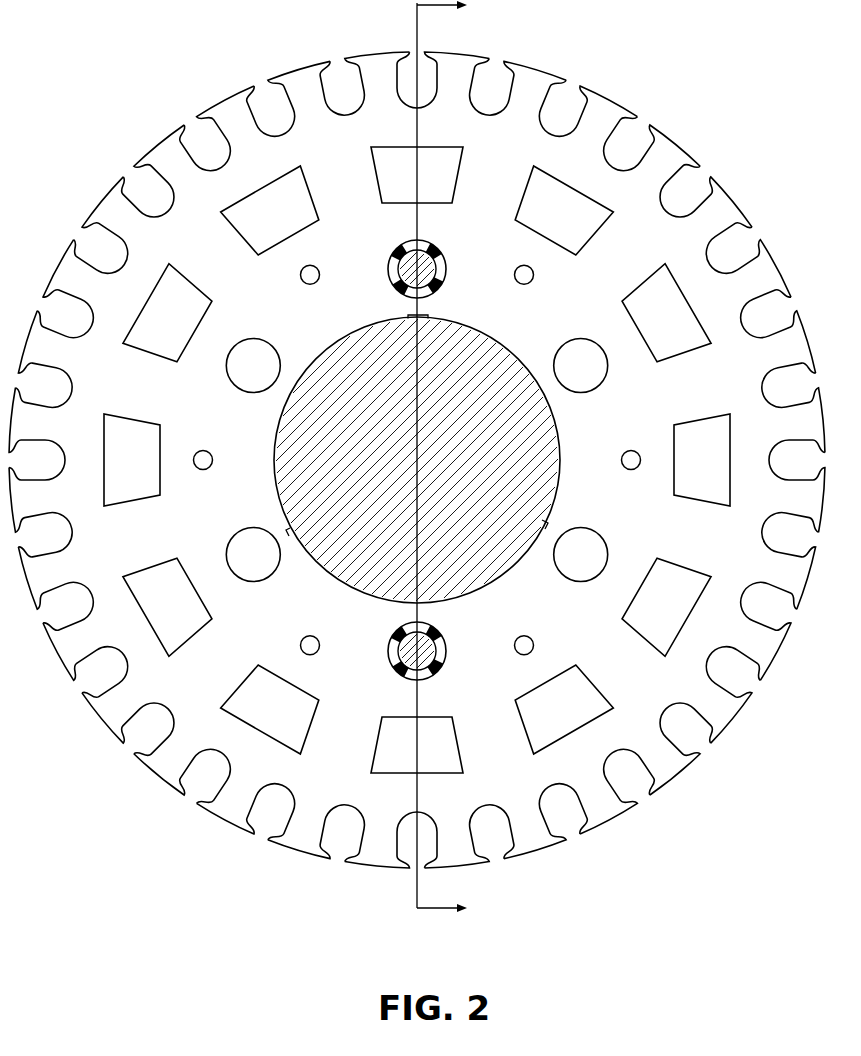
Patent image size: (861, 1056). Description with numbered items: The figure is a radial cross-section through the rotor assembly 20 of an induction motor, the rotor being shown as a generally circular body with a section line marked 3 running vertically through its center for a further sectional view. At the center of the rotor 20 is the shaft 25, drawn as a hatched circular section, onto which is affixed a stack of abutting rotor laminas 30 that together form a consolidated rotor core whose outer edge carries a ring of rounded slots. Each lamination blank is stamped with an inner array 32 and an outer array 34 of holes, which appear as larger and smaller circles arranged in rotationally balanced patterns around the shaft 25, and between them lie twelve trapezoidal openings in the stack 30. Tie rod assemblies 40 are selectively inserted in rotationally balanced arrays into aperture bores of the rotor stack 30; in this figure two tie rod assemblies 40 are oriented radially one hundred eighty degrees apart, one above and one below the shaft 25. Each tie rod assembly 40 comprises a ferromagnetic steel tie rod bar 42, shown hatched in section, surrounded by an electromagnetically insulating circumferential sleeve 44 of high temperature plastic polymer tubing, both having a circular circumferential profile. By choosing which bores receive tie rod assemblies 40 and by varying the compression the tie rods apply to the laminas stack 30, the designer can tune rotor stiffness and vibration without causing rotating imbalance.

The rotor assembly 20 is at (417, 456).
The shaft 25 is at (283, 484).
The rotor laminas stack 30 is at (668, 162).
The inner array of holes 32 is at (232, 376).
The outer array of holes 34 is at (300, 277).
The tie rod assembly 40 is at (413, 449).
The tie rod bar 42 is at (445, 268).
The circumferential sleeve 44 is at (392, 273).
The section line 3- 3 is at (453, 462).